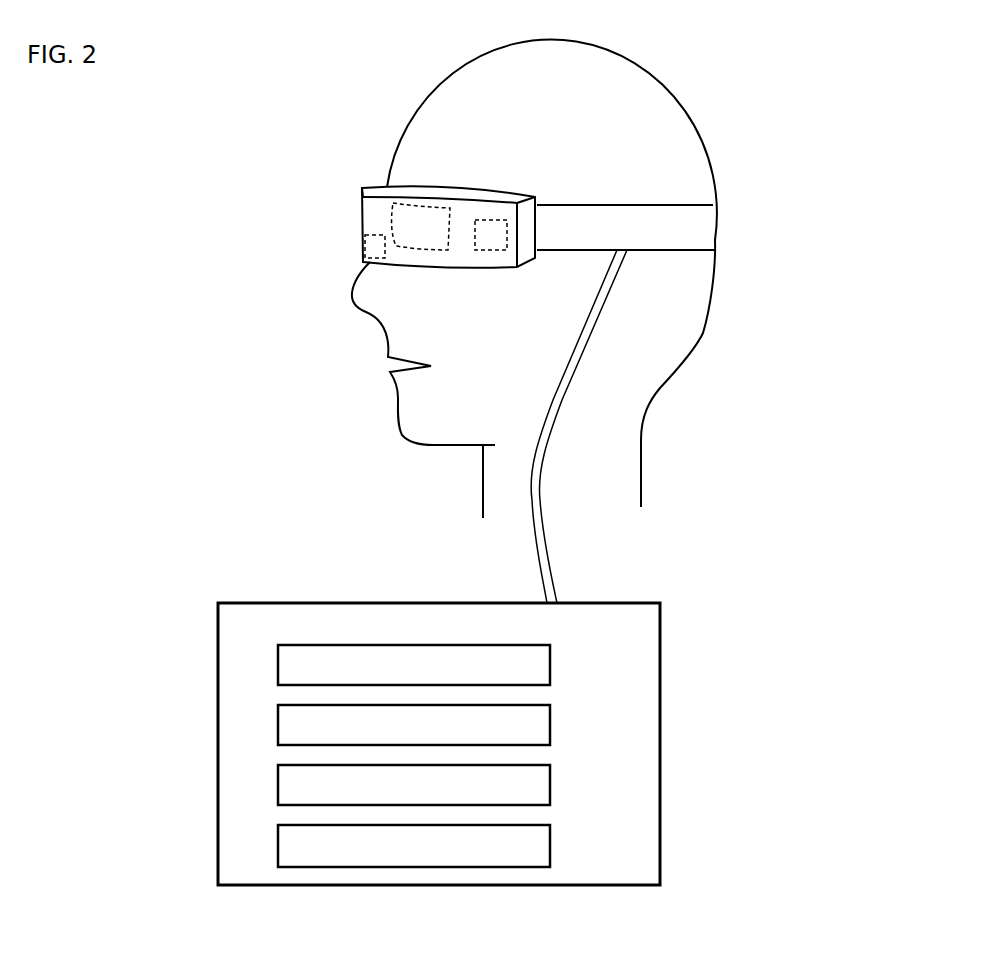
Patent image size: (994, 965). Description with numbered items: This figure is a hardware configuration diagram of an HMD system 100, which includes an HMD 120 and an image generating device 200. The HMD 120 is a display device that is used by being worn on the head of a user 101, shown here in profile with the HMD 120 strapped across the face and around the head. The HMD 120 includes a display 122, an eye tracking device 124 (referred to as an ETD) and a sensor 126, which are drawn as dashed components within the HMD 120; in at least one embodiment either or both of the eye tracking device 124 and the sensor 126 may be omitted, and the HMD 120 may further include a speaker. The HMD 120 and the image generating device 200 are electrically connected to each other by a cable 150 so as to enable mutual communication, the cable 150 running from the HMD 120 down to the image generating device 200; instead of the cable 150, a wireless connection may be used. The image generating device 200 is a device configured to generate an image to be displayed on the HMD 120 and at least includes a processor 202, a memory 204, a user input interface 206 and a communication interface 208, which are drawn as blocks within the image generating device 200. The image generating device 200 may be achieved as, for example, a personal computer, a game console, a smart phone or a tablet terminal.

The HMD system 100 is at (233, 130).
The user 101 is at (695, 127).
The HMD 120 is at (380, 182).
The display 122 is at (395, 222).
The eye tracking device 124 is at (375, 245).
The sensor 126 is at (475, 242).
The cable 150 is at (600, 315).
The image generating device 200 is at (635, 603).
The processor 202 is at (550, 665).
The memory 204 is at (550, 727).
The user input interface 206 is at (550, 792).
The communication interface 208 is at (550, 852).